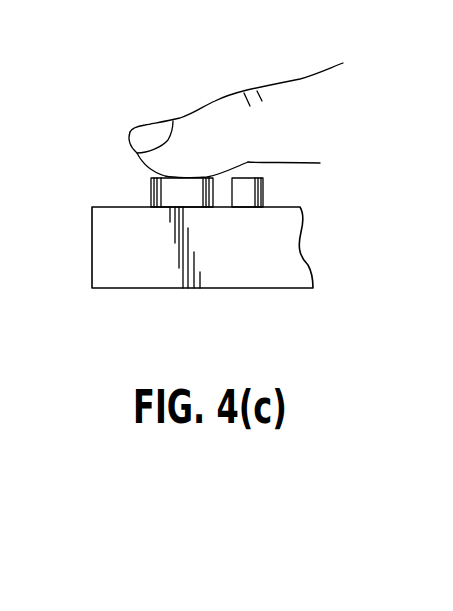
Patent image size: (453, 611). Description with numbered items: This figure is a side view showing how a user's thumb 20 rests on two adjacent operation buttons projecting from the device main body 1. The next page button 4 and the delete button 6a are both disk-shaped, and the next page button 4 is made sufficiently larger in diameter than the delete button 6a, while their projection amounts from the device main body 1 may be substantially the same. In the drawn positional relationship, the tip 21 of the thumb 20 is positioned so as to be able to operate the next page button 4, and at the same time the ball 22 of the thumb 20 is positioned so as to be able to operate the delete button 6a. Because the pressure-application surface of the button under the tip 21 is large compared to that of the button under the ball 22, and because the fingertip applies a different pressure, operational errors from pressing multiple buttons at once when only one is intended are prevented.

The device main body 1 is at (169, 233).
The next page button 4 is at (152, 192).
The delete button 6a is at (245, 193).
The thumb 20 is at (278, 84).
The tip of the thumb 21 is at (183, 162).
The ball of the thumb 22 is at (244, 164).